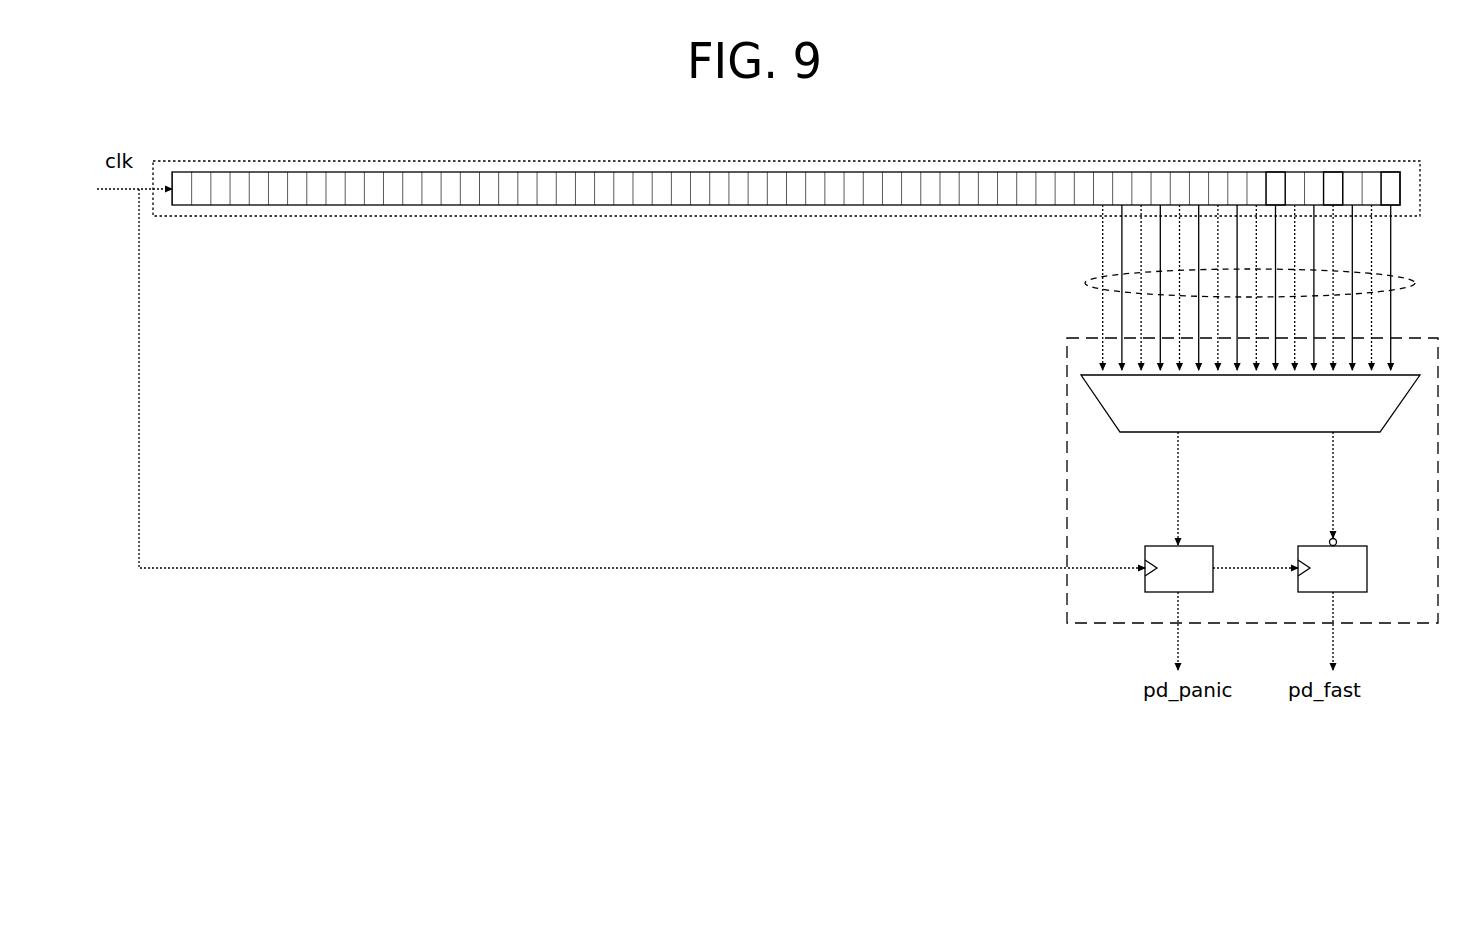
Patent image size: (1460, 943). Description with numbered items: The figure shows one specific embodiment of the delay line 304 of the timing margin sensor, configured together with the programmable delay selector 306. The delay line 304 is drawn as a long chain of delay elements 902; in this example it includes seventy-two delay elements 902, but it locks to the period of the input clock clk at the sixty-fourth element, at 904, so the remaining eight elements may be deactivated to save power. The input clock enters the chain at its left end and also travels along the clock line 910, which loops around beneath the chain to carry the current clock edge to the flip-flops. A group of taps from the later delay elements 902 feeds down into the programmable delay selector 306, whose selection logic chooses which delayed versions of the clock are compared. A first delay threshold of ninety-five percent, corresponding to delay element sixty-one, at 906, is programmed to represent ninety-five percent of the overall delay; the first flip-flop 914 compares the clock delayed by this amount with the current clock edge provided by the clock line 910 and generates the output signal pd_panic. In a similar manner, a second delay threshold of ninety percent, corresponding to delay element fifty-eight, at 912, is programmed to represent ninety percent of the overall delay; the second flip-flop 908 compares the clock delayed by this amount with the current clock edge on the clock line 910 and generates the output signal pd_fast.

The delay line 304 is at (293, 216).
The programmable delay selector 306 is at (1067, 442).
The delay elements 902 is at (338, 172).
The sixty-fourth delay element 904 is at (1391, 172).
The delay element sixty-one 906 is at (1331, 172).
The second flip-flop 908 is at (1353, 547).
The clock line 910 is at (603, 570).
The delay element fifty-eight 912 is at (1274, 172).
The first flip-flop 914 is at (1198, 547).